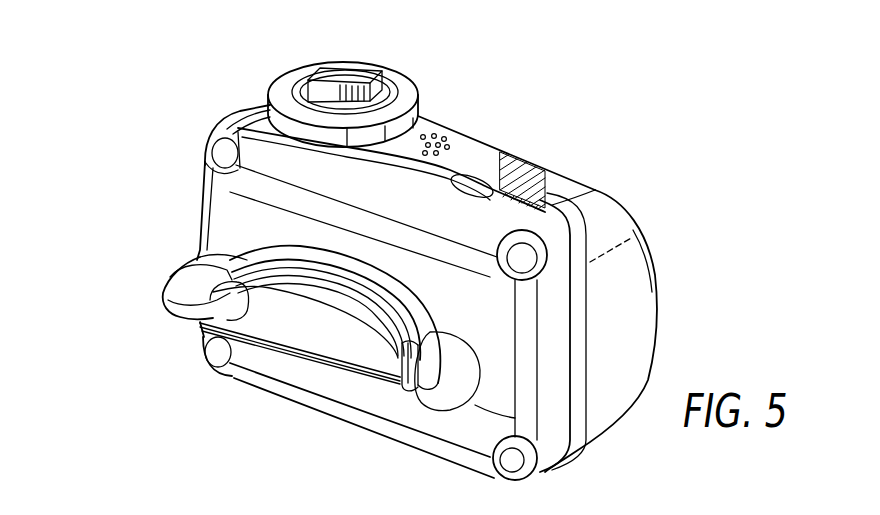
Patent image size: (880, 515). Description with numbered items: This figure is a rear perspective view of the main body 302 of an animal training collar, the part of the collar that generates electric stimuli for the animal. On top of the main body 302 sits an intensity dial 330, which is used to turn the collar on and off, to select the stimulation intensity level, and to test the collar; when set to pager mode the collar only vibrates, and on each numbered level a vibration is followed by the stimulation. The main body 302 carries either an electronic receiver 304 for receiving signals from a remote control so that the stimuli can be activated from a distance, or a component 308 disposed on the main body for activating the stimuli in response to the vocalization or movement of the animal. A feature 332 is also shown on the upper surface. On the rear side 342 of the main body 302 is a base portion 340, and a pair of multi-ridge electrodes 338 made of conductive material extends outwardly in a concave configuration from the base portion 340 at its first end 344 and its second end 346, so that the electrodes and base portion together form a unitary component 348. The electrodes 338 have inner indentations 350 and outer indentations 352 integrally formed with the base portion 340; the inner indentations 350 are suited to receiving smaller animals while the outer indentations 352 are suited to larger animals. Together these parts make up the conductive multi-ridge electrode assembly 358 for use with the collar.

The main body 302 is at (505, 95).
The electronic receiver 304 is at (487, 156).
The component 308 is at (442, 140).
The intensity dial 330 is at (328, 74).
The button 332 is at (490, 184).
The multi-ridge electrodes 338 is at (190, 325).
The base portion 340 is at (291, 234).
The rear side 342 is at (445, 213).
The first end 344 is at (238, 236).
The second end 346 is at (450, 318).
The unitary component 348 is at (351, 260).
The inner indentations 350 is at (282, 312).
The outer indentations 352 is at (197, 299).
The conductive multi-ridge electrode assembly 358 is at (183, 433).